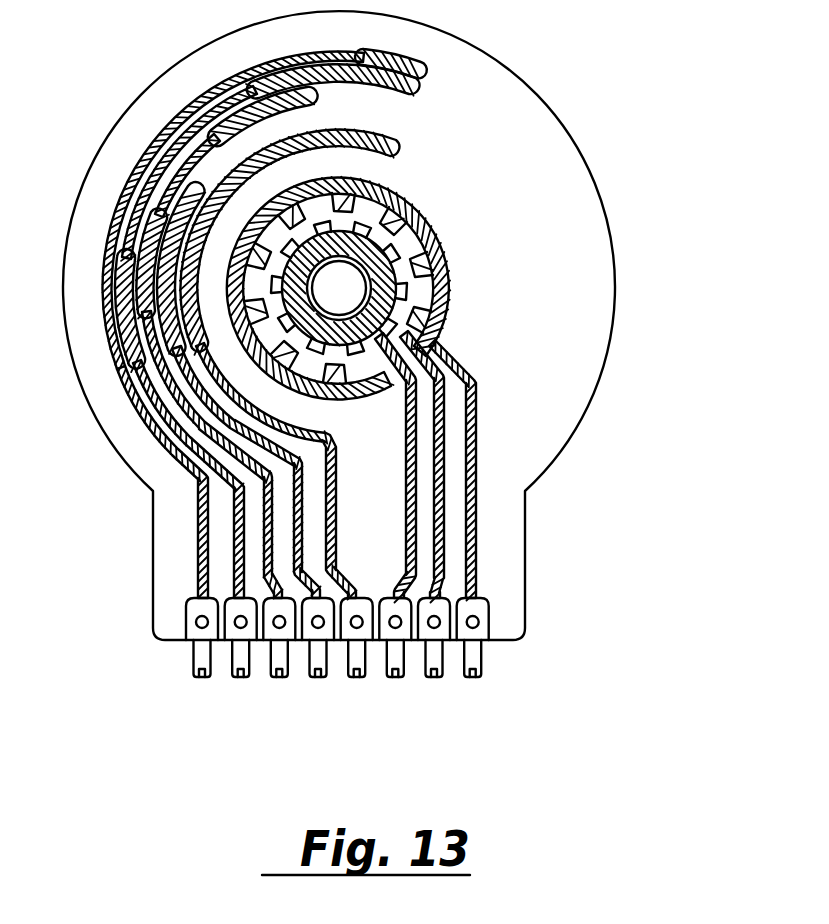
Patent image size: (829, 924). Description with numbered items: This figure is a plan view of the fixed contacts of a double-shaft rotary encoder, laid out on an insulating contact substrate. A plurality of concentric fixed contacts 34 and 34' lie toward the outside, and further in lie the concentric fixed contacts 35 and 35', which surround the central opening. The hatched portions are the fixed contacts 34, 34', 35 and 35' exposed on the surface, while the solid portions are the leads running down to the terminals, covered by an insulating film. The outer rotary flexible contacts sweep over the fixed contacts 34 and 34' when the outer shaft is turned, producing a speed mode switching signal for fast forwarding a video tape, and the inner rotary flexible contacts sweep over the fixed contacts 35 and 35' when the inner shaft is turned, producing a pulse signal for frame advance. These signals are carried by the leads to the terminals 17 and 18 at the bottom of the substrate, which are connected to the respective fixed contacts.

The fixed contact 34' is at (323, 192).
The fixed contact 34 is at (334, 230).
The fixed contact 35' is at (380, 289).
The fixed contact 35 is at (396, 288).
The terminals 17 is at (210, 677).
The terminals 18 is at (398, 677).